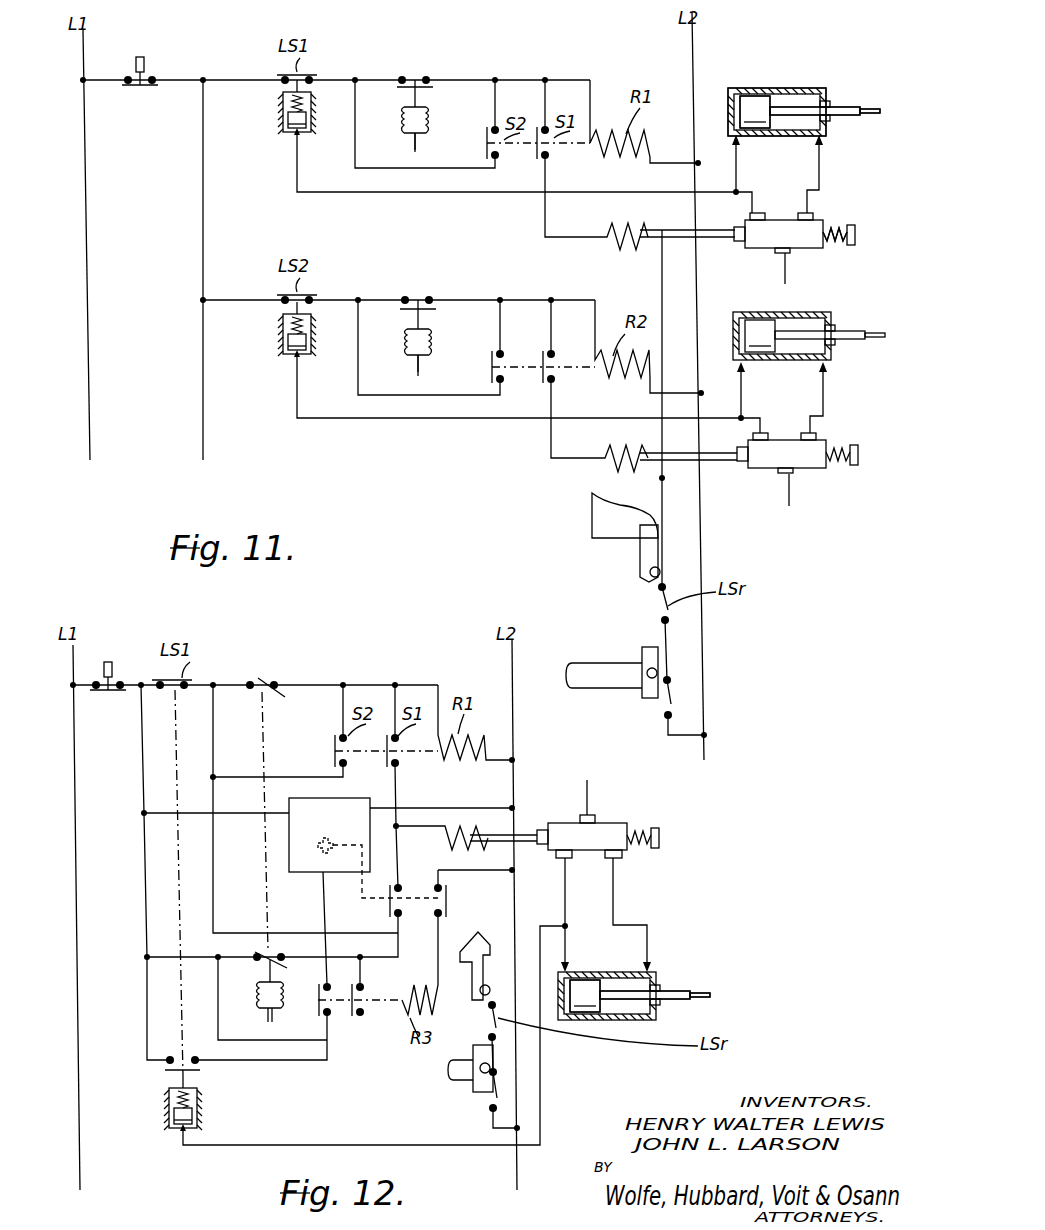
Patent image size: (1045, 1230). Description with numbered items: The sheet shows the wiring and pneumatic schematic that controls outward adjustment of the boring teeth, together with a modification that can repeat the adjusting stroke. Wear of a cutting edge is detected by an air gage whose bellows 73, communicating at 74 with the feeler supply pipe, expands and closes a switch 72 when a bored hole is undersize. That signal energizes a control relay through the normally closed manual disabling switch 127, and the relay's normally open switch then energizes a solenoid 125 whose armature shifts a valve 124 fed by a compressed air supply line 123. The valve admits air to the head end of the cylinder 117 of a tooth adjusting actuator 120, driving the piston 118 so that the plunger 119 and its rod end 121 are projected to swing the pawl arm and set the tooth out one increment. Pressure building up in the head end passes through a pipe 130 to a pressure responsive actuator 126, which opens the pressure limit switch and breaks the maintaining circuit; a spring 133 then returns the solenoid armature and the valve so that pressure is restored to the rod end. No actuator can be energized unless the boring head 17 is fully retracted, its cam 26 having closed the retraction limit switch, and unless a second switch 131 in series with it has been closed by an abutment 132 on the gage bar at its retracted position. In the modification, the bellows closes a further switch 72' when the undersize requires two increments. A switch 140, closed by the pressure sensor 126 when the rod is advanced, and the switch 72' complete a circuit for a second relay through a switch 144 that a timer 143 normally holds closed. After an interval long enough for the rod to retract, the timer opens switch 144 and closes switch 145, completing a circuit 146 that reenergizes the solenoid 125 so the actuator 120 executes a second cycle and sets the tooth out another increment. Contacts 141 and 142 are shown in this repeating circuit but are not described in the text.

In FIG. 11, the boring head 17 is at (590, 525).
In FIG. 11, the cam 26 is at (637, 560).
In FIG. 11, the switch 72 is at (430, 58).
In FIG. 12, the switch 72 is at (275, 672).
In FIG. 12, the switch 72' is at (254, 968).
In FIG. 11, the bellows 73 is at (433, 122).
In FIG. 12, the bellows 73 is at (264, 1012).
In FIG. 11, the bellows interior communication 74 is at (420, 142).
In FIG. 11, the cylinder 117 is at (820, 86).
In FIG. 11, the piston 118 is at (756, 92).
In FIG. 12, the piston 118 is at (586, 984).
In FIG. 11, the plunger 119 is at (802, 136).
In FIG. 12, the plunger 119 is at (640, 1020).
In FIG. 11, the tooth adjusting actuator 120 is at (806, 211).
In FIG. 12, the tooth adjusting actuator 120 is at (658, 989).
In FIG. 11, the rod end 121 is at (874, 114).
In FIG. 12, the rod end 121 is at (708, 998).
In FIG. 11, the supply line 123 is at (782, 268).
In FIG. 11, the valve 124 is at (815, 222).
In FIG. 12, the valve 124 is at (612, 826).
In FIG. 11, the solenoid 125 is at (612, 250).
In FIG. 12, the solenoid 125 is at (448, 826).
In FIG. 11, the pressure responsive actuator 126 is at (280, 141).
In FIG. 12, the pressure responsive actuator 126 is at (164, 1126).
In FIG. 11, the switch 127 is at (146, 94).
In FIG. 12, the switch 127 is at (108, 697).
In FIG. 11, the pipe 130 is at (468, 196).
In FIG. 12, the pipe 130 is at (295, 1145).
In FIG. 11, the second switch 131 is at (669, 700).
In FIG. 12, the second switch 131 is at (498, 1100).
In FIG. 11, the abutment 132 is at (648, 668).
In FIG. 11, the spring 133 is at (834, 236).
In FIG. 12, the switch 140 is at (164, 1068).
In FIG. 12, the switch contacts 141 is at (362, 1020).
In FIG. 12, the switch contacts 142 is at (330, 1020).
In FIG. 12, the timer 143 is at (304, 872).
In FIG. 12, the switch 144 is at (446, 900).
In FIG. 12, the switch 145 is at (382, 896).
In FIG. 12, the circuit 146 is at (248, 932).